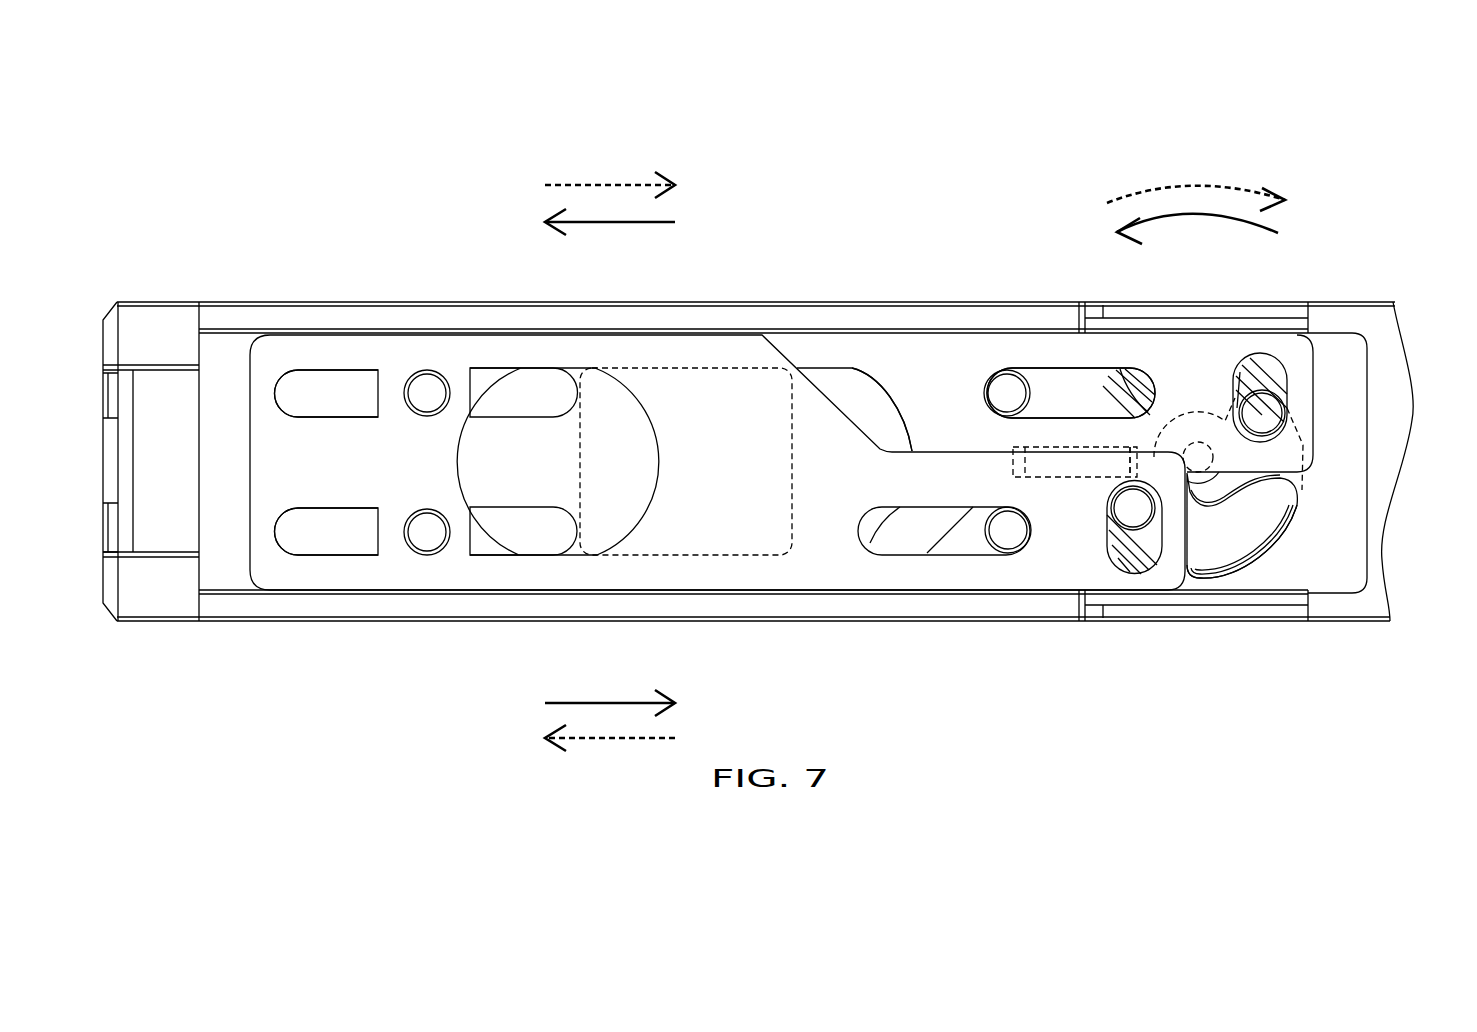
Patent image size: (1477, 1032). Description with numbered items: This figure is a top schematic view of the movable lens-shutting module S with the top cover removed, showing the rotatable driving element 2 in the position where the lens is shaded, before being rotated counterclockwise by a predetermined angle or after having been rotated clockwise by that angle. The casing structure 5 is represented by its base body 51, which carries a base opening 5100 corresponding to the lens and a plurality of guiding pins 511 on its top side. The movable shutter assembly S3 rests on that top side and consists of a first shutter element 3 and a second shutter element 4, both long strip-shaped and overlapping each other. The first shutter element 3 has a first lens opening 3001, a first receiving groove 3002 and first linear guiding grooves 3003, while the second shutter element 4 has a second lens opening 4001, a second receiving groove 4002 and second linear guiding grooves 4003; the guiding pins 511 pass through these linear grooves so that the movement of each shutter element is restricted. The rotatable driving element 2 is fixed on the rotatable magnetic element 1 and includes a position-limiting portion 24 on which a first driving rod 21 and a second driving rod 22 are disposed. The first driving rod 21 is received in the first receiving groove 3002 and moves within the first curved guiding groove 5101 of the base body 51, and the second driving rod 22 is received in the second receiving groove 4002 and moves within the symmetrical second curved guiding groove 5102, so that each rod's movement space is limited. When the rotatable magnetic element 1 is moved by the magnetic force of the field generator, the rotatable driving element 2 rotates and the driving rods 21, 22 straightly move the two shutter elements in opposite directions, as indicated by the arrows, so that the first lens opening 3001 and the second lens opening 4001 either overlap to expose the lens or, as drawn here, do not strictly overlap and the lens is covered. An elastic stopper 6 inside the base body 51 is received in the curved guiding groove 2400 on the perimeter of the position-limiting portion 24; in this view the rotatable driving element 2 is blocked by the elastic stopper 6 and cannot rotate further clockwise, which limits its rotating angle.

The movable lens-shutting module S is at (117, 185).
The movable shutter assembly S3 is at (812, 252).
The casing structure 5 is at (222, 304).
The base body 51 is at (1388, 384).
The second shutter element 4 is at (710, 337).
The first shutter element 3 is at (808, 337).
The first lens opening 3001 is at (872, 384).
The first linear guiding grooves 3003 is at (540, 376).
The second linear guiding grooves 4003 is at (323, 374).
The guiding pins 511 is at (429, 392).
The second lens opening 4001 is at (634, 519).
The base opening 5100 is at (734, 540).
The first curved guiding groove 5101 is at (1126, 378).
The rotatable magnetic element 1 is at (1112, 404).
The first receiving groove 3002 is at (1278, 366).
The first driving rod 21 is at (1259, 392).
The rotatable driving element 2 is at (1296, 447).
The position-limiting portion 24 is at (1190, 416).
The second curved guiding groove 5102 is at (1250, 558).
The second receiving groove 4002 is at (1119, 568).
The second driving rod 22 is at (1148, 518).
The elastic stopper 6 is at (1067, 474).
The curved guiding groove 2400 is at (1144, 478).